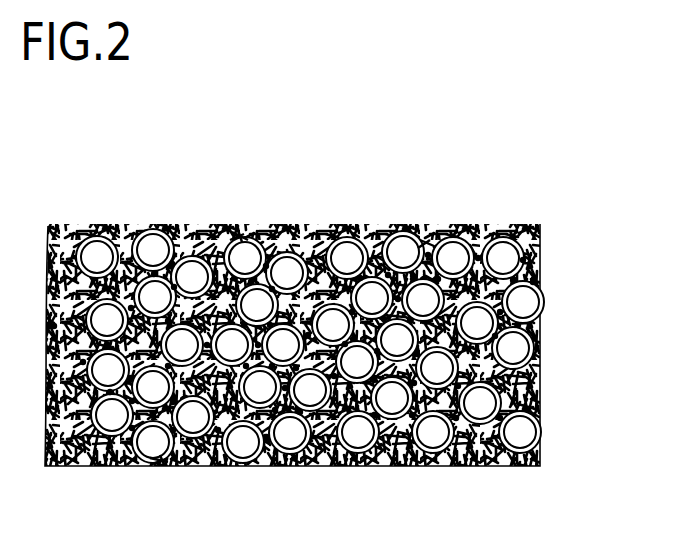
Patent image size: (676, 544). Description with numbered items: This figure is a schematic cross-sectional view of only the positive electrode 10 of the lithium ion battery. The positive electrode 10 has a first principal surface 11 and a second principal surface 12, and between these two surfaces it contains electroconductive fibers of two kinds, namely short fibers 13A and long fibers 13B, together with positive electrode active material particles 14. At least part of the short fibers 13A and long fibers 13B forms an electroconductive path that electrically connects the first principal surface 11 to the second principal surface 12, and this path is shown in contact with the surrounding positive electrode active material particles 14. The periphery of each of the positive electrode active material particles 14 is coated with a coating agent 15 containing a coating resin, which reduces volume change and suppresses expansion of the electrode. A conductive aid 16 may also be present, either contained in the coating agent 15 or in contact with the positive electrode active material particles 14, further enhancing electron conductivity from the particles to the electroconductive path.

The positive electrode 10 is at (332, 340).
The first principal surface 11 is at (162, 460).
The second principal surface 12 is at (150, 228).
The short fibers 13A is at (243, 235).
The long fibers 13B is at (349, 250).
The positive electrode active material particles 14 is at (470, 240).
The coating agent 15 is at (428, 237).
The conductive aid 16 is at (452, 233).